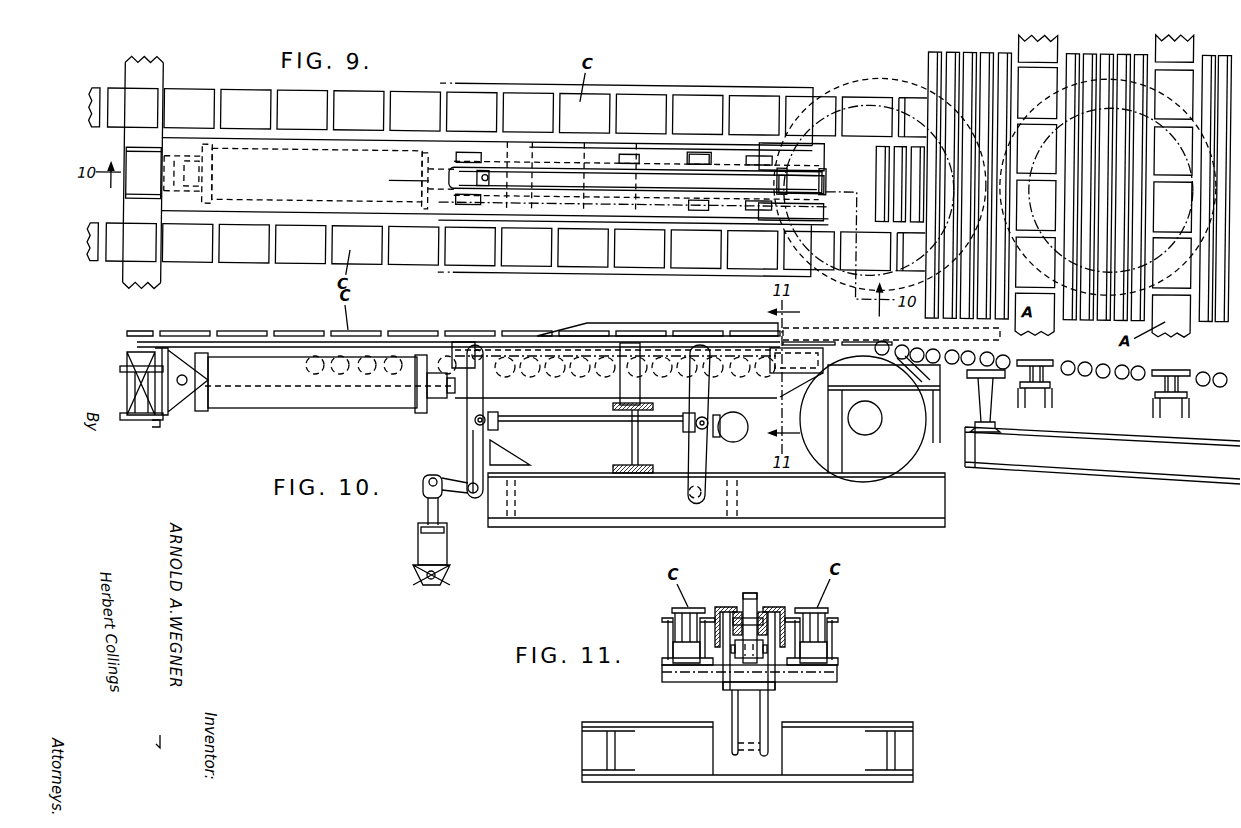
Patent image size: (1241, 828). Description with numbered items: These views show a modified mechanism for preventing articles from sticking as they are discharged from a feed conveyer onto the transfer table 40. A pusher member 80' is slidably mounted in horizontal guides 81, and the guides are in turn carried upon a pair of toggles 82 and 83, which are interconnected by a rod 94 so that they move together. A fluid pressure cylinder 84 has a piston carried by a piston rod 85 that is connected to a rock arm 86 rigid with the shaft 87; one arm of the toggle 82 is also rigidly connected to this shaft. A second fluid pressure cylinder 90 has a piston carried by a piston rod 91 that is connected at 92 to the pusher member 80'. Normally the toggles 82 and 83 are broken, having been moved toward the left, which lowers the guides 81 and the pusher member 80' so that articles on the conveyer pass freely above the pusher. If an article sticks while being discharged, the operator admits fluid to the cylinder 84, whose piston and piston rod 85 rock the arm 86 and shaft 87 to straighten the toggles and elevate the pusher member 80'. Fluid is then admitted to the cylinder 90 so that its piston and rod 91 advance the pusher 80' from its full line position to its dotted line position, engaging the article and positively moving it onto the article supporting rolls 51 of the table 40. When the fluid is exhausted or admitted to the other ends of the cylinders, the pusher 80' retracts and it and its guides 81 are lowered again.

In FIG. 10, the transfer table 40 is at (1080, 472).
In FIG. 9, the article supporting rolls 51 is at (1107, 166).
In FIG. 10, the article supporting rolls 51 is at (1120, 378).
In FIG. 9, the pusher member 80' is at (633, 161).
In FIG. 10, the pusher member 80' is at (726, 342).
In FIG. 11, the pusher member 80' is at (759, 602).
In FIG. 9, the horizontal guides 81 is at (535, 155).
In FIG. 10, the horizontal guides 81 is at (540, 365).
In FIG. 11, the horizontal guides 81 is at (738, 608).
In FIG. 9, the toggle 82 is at (483, 172).
In FIG. 10, the toggle 82 is at (470, 443).
In FIG. 9, the toggle 83 is at (695, 141).
In FIG. 10, the toggle 83 is at (697, 447).
In FIG. 11, the toggle 83 is at (728, 657).
In FIG. 10, the fluid pressure cylinder 84 is at (420, 548).
In FIG. 10, the piston rod 85 is at (428, 508).
In FIG. 10, the rock arm 86 is at (470, 479).
In FIG. 10, the shaft 87 is at (473, 497).
In FIG. 9, the second fluid pressure cylinder 90 is at (307, 198).
In FIG. 10, the second fluid pressure cylinder 90 is at (268, 401).
In FIG. 10, the piston rod 91 is at (460, 392).
In FIG. 11, the piston rod 91 is at (757, 660).
In FIG. 9, the connection 92 is at (487, 177).
In FIG. 10, the connection 92 is at (505, 388).
In FIG. 10, the rod 94 is at (582, 423).